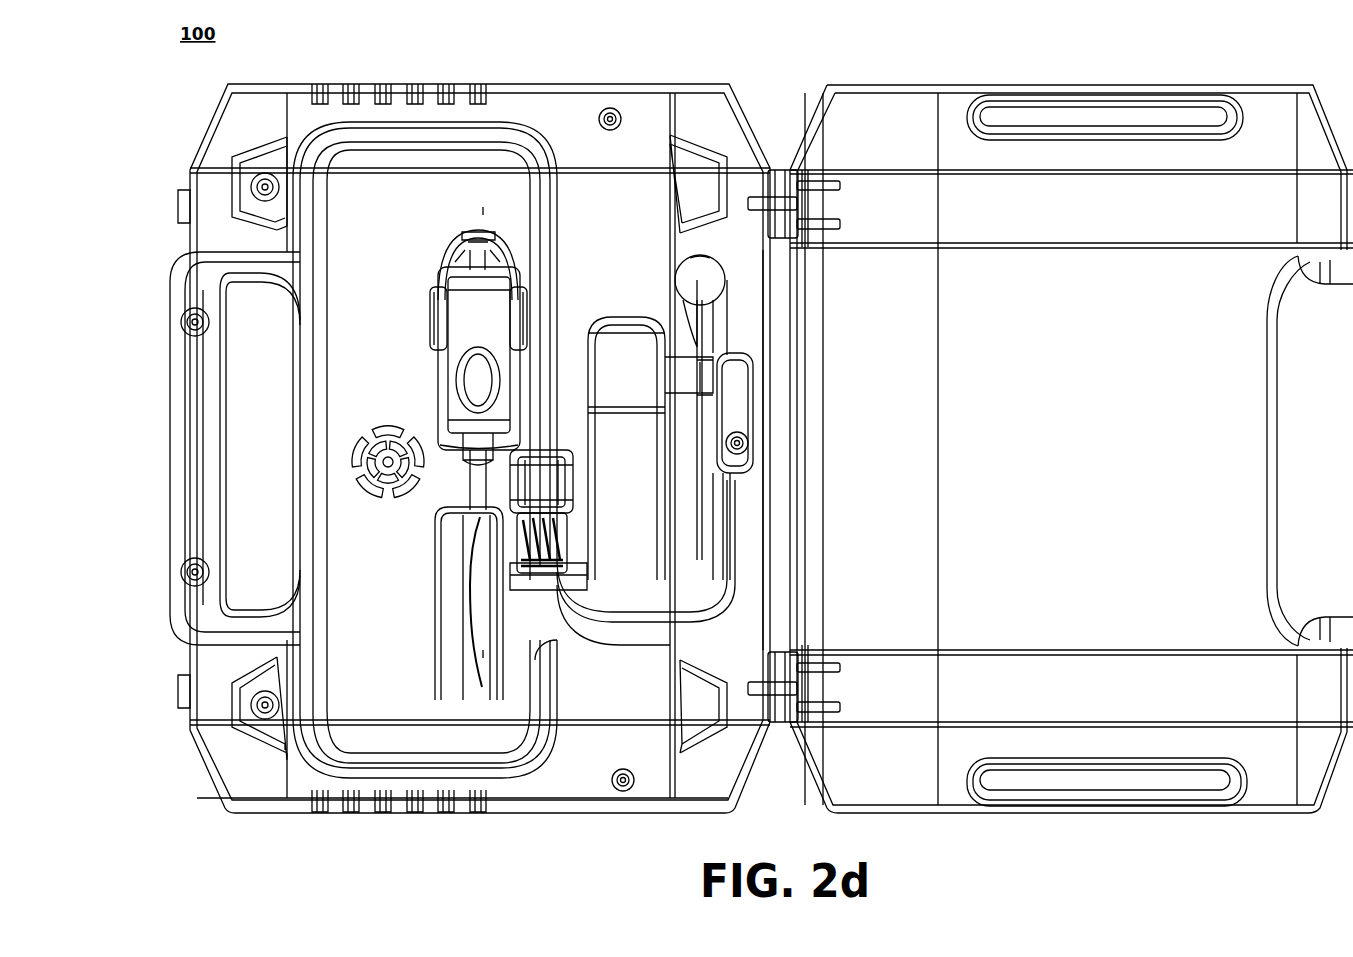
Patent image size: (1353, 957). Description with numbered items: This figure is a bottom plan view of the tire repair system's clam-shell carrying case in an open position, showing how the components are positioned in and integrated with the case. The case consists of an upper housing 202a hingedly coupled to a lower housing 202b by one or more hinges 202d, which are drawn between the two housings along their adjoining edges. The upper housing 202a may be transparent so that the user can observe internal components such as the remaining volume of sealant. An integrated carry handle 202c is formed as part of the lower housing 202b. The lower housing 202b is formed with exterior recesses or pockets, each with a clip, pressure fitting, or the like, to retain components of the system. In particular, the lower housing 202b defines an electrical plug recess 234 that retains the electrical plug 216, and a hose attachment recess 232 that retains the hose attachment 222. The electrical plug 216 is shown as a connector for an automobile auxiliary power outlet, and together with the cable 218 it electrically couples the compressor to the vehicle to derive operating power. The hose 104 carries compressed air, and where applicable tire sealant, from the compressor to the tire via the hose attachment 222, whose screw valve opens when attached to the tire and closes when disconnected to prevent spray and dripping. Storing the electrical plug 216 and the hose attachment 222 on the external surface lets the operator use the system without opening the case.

The hose 104 is at (517, 190).
The upper housing 202a is at (985, 85).
The lower housing 202b is at (522, 83).
The integrated carry handle 202c is at (228, 432).
The hinge 202d is at (783, 165).
The electrical plug 216 is at (440, 388).
The cable 218 is at (480, 610).
The hose attachment 222 is at (570, 508).
The hose attachment recess 232 is at (570, 483).
The electrical plug recess 234 is at (437, 365).